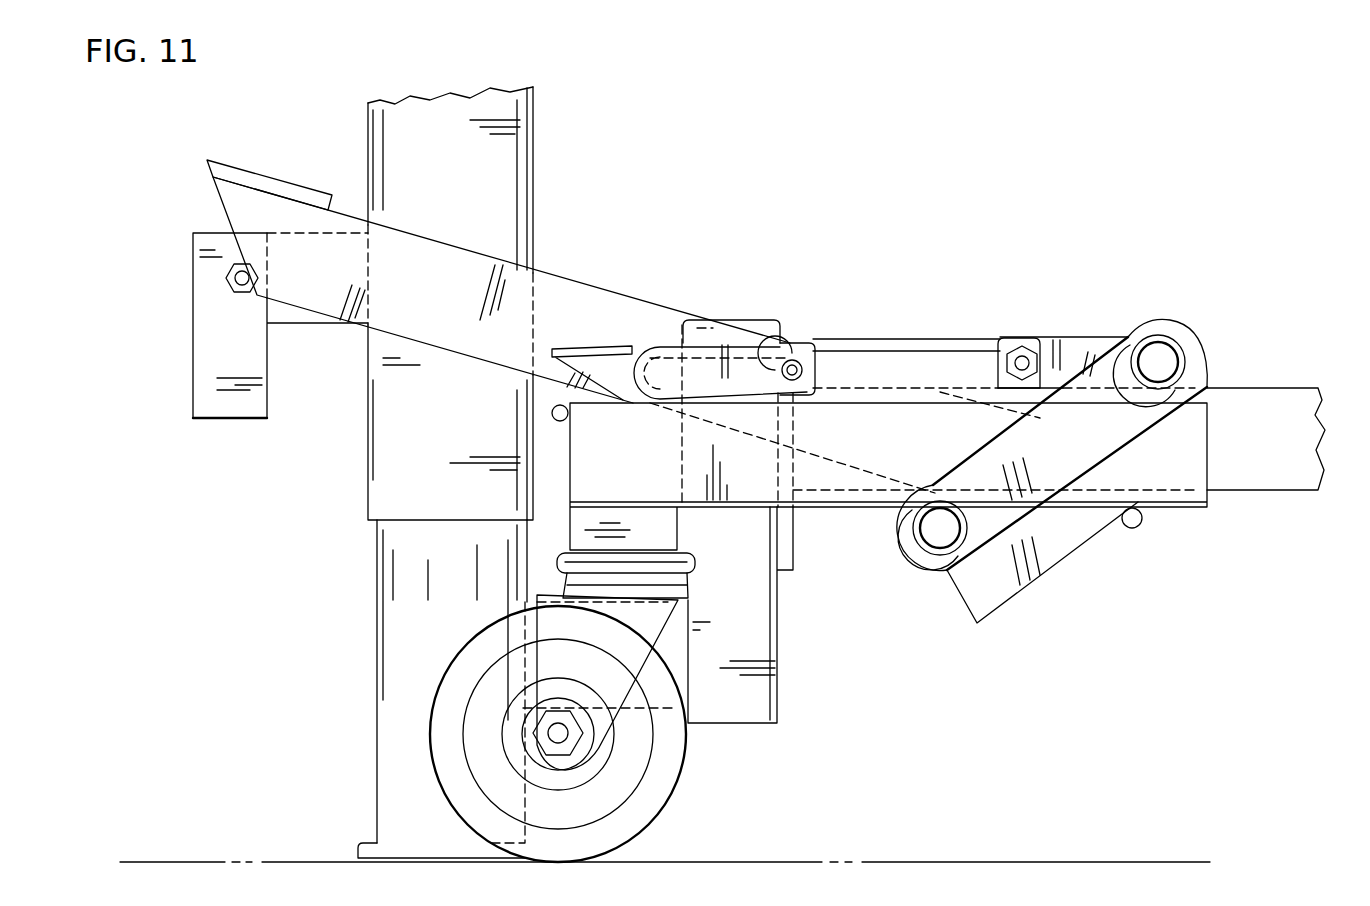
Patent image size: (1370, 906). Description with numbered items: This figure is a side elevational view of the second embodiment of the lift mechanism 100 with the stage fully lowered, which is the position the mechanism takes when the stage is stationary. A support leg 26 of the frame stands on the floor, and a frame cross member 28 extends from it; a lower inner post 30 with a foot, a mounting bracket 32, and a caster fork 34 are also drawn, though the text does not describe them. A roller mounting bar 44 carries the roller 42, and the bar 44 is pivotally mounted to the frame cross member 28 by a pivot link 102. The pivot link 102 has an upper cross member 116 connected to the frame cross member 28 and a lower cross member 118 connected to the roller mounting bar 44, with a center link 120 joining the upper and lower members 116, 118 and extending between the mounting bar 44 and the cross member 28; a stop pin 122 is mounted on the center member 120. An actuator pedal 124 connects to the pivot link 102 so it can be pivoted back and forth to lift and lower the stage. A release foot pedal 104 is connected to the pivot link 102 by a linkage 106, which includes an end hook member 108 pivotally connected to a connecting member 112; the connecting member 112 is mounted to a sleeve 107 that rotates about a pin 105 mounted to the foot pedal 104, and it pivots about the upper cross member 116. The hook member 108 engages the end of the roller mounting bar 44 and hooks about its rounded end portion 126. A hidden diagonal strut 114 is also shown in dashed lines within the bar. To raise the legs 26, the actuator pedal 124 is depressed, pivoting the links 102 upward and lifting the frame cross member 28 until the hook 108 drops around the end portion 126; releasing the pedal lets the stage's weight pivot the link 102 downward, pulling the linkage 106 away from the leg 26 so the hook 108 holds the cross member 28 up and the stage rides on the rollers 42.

The support leg 26 is at (520, 128).
The frame cross member 28 is at (1293, 470).
The inner post 30 is at (377, 690).
The mounting bracket 32 is at (250, 418).
The caster fork 34 is at (690, 733).
The roller 42 is at (680, 785).
The roller mounting bar 44 is at (624, 474).
The lift mechanism 100 is at (956, 418).
The pivot link 102 is at (1218, 313).
The release foot pedal 104 is at (612, 340).
The pin 105 is at (798, 352).
The linkage 106 is at (1052, 303).
The sleeve 107 is at (815, 345).
The hook member 108 is at (668, 343).
The connecting member 112 is at (1093, 338).
The hidden strut 114 is at (940, 470).
The upper cross member 116 is at (1203, 350).
The lower cross member 118 is at (895, 548).
The center link 120 is at (1000, 615).
The stop pin 122 is at (1137, 528).
The actuator pedal 124 is at (258, 176).
The rounded end portion 126 is at (552, 413).